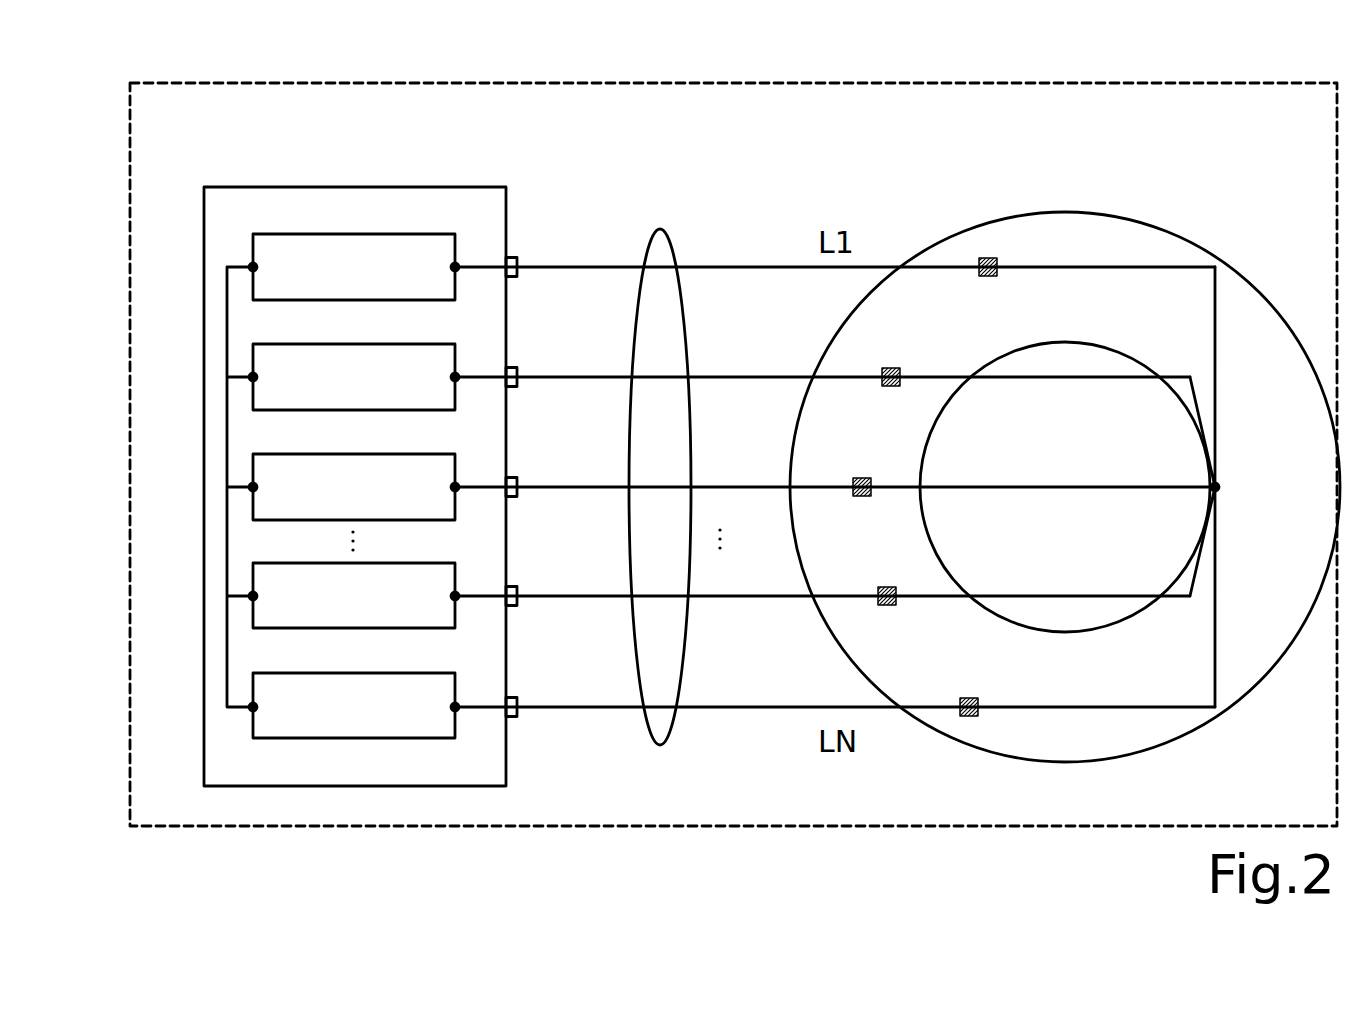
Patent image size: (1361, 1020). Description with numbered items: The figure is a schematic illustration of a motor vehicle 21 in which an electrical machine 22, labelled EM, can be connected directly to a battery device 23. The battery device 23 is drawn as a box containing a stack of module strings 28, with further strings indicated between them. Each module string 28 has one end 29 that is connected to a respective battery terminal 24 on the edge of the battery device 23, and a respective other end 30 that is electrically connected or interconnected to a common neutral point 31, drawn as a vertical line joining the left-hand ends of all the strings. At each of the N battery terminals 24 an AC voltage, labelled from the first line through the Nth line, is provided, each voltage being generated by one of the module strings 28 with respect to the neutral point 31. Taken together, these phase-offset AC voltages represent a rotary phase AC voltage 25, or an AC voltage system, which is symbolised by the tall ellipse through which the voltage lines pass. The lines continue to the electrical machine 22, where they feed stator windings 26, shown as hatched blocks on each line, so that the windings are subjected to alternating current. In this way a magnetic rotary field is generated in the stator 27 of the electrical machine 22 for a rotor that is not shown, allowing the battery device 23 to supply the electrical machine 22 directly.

The motor vehicle 21 is at (218, 82).
The electrical machine 22 is at (1065, 212).
The battery device 23 is at (342, 187).
The battery terminals 24 is at (512, 258).
The rotary phase AC voltage 25 is at (660, 228).
The stator windings 26 is at (990, 278).
The stator 27 is at (1245, 323).
The module strings 28 is at (455, 234).
The one end 29 is at (455, 267).
The other end 30 is at (253, 267).
The neutral point 31 is at (227, 512).